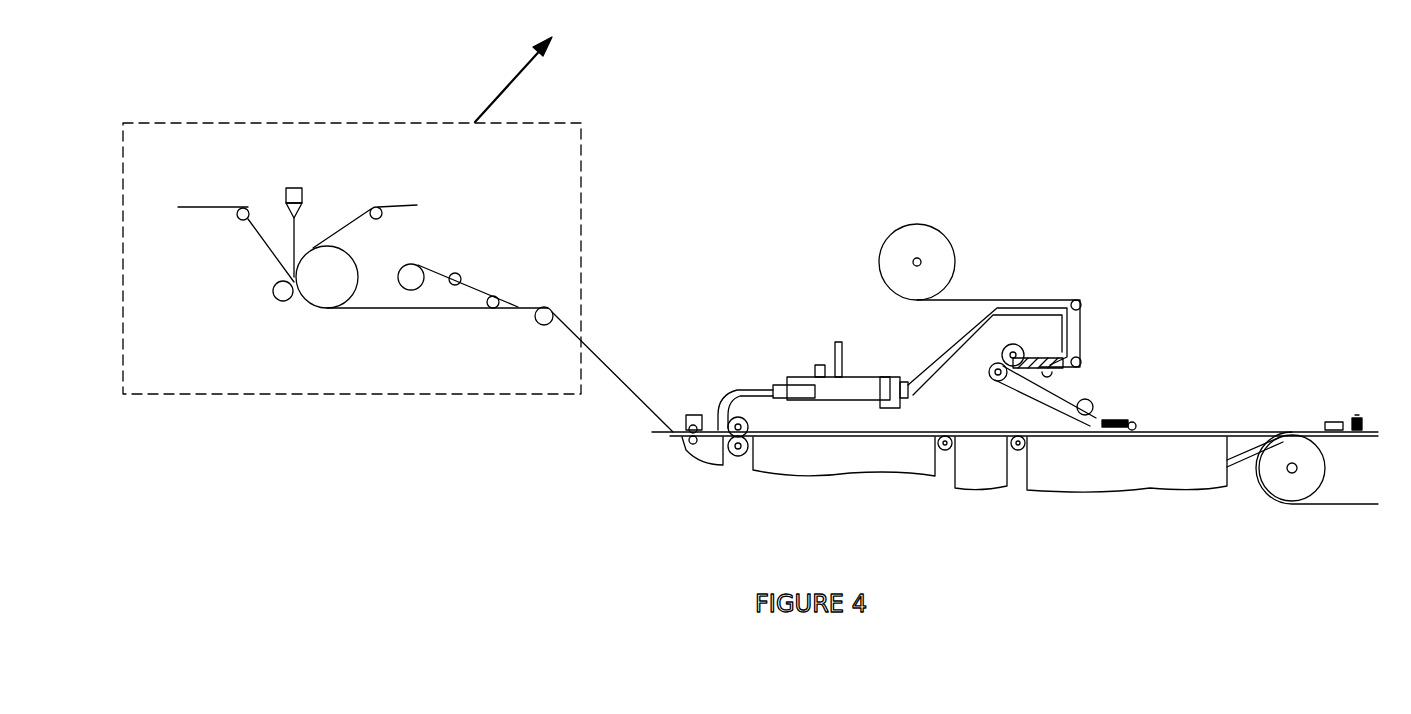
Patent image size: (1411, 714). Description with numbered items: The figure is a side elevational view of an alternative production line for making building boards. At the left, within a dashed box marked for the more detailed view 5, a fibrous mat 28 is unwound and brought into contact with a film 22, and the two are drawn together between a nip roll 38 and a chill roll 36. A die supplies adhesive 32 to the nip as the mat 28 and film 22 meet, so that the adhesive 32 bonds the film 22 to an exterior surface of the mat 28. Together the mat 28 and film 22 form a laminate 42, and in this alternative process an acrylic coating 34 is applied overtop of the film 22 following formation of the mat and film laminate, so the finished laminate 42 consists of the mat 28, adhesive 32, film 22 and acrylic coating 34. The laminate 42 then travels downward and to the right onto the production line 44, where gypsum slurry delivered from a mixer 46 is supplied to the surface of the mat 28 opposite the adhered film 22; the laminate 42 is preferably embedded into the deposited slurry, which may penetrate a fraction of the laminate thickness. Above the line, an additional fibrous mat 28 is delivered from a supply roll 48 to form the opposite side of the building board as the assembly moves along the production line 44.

The view direction indicator for FIG. 5 is at (529, 74).
The film 22 is at (390, 203).
The mat 28 is at (190, 208).
The adhesive 32 is at (302, 195).
The acrylic coating 34 is at (433, 265).
The chill roll 36 is at (353, 257).
The nip roll 38 is at (273, 290).
The laminate 42 is at (417, 309).
The production line 44 is at (778, 212).
The mixer 46 is at (763, 387).
The supply roll 48 is at (907, 223).